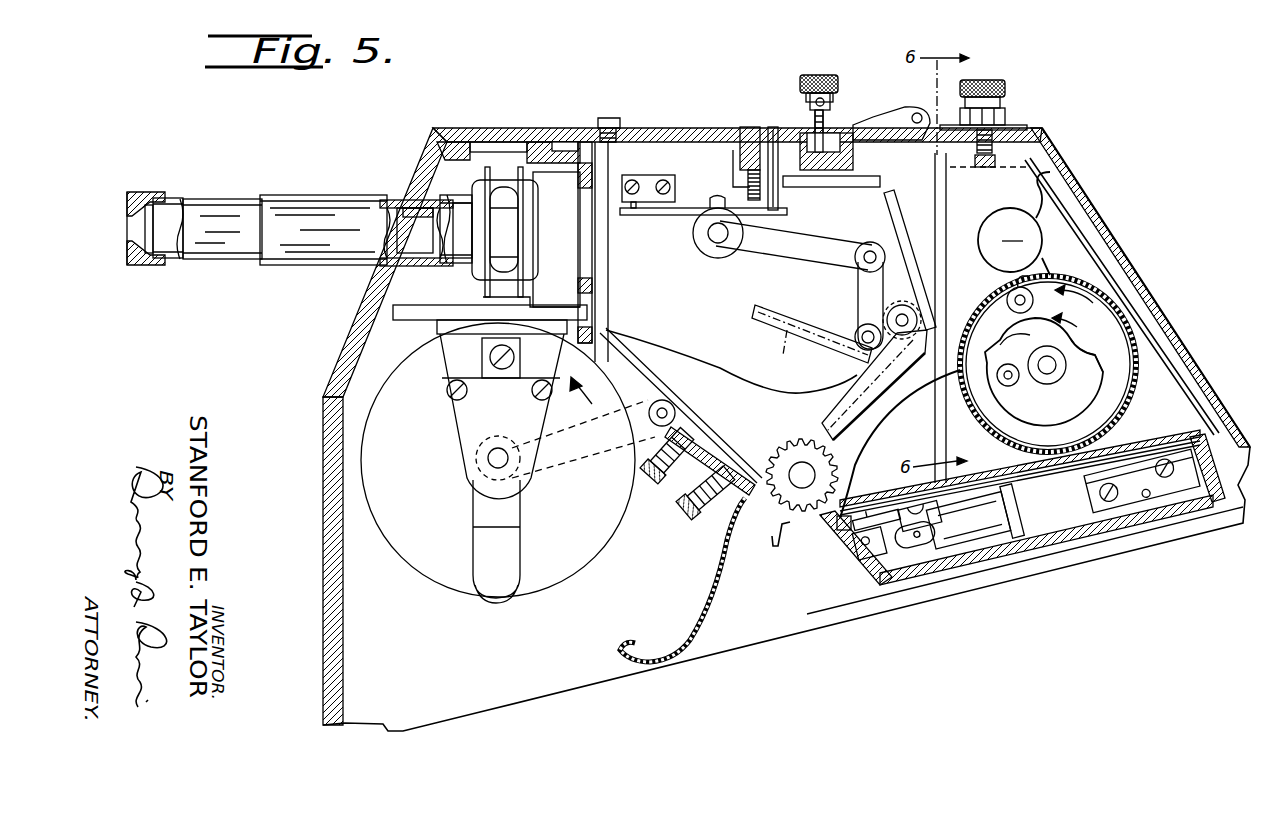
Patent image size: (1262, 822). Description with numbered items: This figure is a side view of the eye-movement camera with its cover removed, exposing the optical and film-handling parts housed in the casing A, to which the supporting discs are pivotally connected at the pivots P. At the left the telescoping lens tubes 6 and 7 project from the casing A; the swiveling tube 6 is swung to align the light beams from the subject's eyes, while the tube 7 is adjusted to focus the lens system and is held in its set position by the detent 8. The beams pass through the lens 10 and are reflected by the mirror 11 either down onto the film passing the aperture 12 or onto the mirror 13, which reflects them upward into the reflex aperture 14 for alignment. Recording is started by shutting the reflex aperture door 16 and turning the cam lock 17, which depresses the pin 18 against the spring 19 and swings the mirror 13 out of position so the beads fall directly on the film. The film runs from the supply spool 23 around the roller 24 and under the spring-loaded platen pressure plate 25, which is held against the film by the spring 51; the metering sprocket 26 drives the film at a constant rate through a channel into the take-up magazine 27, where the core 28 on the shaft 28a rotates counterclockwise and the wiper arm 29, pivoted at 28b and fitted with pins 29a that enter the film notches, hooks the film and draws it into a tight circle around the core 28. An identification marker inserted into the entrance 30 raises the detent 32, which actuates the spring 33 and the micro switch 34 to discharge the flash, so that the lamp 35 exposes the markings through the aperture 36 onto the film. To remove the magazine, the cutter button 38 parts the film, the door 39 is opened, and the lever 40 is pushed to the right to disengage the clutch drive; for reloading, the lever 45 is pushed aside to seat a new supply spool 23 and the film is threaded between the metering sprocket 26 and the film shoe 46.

The telescoping lens tube 6 is at (307, 217).
The telescoping lens tube 7 is at (208, 227).
The detent 8 is at (400, 200).
The lens 10 is at (152, 220).
The mirror 11 is at (902, 210).
The aperture 12 is at (713, 440).
The mirror 13 is at (793, 322).
The reflex aperture 14 is at (850, 187).
The reflex aperture door 16 is at (873, 118).
The cam lock 17 is at (840, 107).
The pin 18 is at (740, 132).
The spring 19 is at (780, 217).
The supply spool 23 is at (608, 492).
The roller 24 is at (663, 410).
The platen pressure plate 25 is at (730, 467).
The metering sprocket 26 is at (787, 457).
The take-up magazine 27 is at (1066, 348).
The core 28 is at (1044, 372).
The shaft 28a is at (1057, 362).
The pivot connection 28b is at (1008, 386).
The wiper arm 29 is at (1033, 298).
The pins 29a is at (1050, 280).
The entrance 30 is at (1220, 415).
The detent 32 is at (835, 537).
The spring 33 is at (850, 530).
The micro switch 34 is at (877, 547).
The lamp 35 is at (915, 547).
The aperture 36 is at (878, 512).
The cutter button 38 is at (1003, 80).
The door 39 is at (1062, 187).
The lever 40 is at (1014, 223).
The lever 45 is at (508, 565).
The film shoe 46 is at (787, 542).
The spring 51 is at (720, 597).
The casing A is at (360, 318).
The pivot P is at (490, 458).